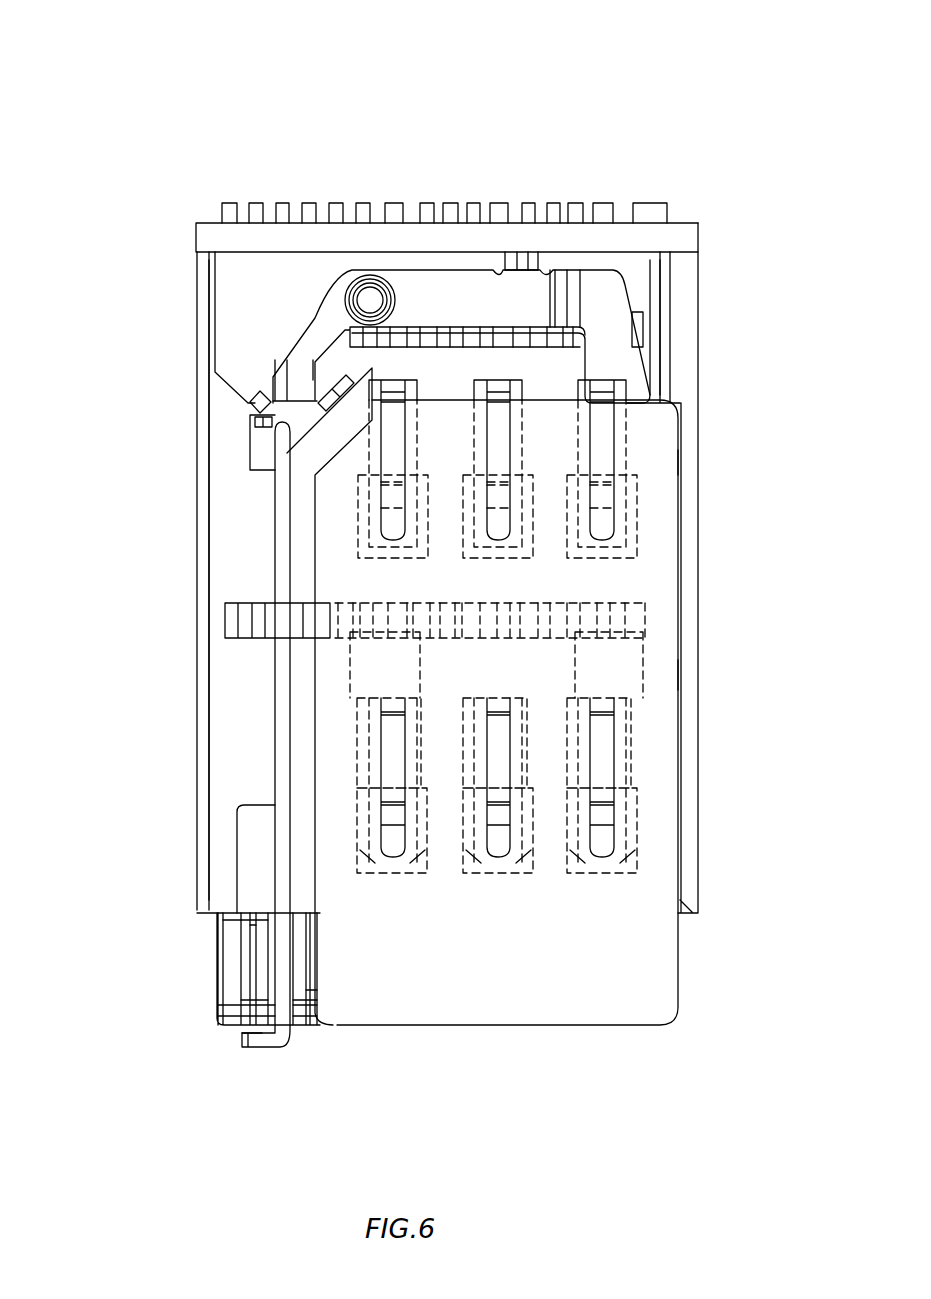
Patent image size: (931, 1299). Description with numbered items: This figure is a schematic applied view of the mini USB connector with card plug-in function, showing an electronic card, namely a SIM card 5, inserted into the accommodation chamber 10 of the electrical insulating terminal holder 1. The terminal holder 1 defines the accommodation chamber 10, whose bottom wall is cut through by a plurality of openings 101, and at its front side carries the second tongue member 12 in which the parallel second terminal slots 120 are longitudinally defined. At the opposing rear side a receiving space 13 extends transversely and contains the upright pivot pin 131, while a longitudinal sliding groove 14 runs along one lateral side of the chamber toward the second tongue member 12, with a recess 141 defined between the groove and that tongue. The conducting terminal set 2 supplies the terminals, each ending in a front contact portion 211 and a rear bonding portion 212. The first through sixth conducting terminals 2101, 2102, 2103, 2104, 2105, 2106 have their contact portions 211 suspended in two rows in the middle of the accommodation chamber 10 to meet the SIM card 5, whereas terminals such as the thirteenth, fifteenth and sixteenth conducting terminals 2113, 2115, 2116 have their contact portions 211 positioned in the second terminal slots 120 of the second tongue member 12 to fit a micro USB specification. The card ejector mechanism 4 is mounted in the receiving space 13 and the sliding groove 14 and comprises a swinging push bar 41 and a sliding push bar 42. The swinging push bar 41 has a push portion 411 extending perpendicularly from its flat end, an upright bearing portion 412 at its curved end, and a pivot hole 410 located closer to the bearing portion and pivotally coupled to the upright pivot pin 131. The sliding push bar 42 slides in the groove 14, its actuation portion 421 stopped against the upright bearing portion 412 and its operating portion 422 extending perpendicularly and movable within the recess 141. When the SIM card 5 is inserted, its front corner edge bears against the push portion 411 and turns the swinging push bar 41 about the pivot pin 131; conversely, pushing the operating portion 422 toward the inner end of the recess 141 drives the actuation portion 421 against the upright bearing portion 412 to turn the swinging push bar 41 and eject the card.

The electrical insulating terminal holder 1 is at (688, 605).
The accommodation chamber 10 is at (683, 675).
The openings 101 is at (650, 463).
The second tongue member 12 is at (218, 1005).
The second terminal slots 120 is at (240, 1018).
The receiving space 13 is at (653, 266).
The upright pivot pin 131 is at (370, 300).
The longitudinal sliding groove 14 is at (276, 705).
The recess 141 is at (237, 878).
The conducting terminal set 2 is at (658, 136).
The contact portion 211 is at (258, 942).
The first conducting terminal 2101 is at (400, 748).
The second conducting terminal 2102 is at (502, 750).
The third conducting terminal 2103 is at (605, 772).
The fourth conducting terminal 2104 is at (400, 452).
The fifth conducting terminal 2105 is at (620, 405).
The sixth conducting terminal 2106 is at (602, 436).
The thirteenth conducting terminal 2113 is at (313, 995).
The fifteenth conducting terminal 2115 is at (258, 980).
The sixteenth conducting terminal 2116 is at (232, 948).
The bonding portion 212 is at (648, 210).
The card ejector mechanism 4 is at (467, 136).
The swinging push bar 41 is at (470, 293).
The pivot hole 410 is at (383, 290).
The push portion 411 is at (642, 382).
The upright bearing portion 412 is at (272, 428).
The sliding push bar 42 is at (282, 556).
The actuation portion 421 is at (250, 403).
The operating portion 422 is at (262, 1050).
The SIM card 5 is at (660, 513).